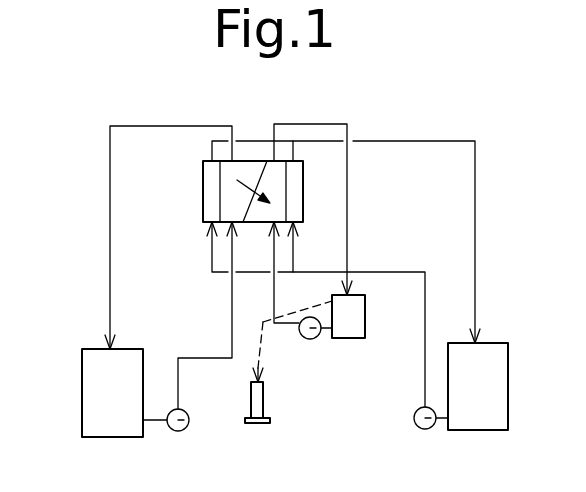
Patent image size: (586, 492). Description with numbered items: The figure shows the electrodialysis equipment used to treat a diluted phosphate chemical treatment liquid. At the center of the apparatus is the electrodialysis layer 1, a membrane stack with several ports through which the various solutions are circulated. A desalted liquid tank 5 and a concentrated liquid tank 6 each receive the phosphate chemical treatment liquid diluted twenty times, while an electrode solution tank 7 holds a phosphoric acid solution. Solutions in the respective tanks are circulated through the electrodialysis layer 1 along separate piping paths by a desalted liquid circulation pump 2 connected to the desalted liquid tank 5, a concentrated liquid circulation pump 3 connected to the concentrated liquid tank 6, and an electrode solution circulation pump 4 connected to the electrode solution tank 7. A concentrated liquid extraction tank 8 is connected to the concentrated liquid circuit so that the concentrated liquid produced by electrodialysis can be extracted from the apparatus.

The electrodialysis layer 1 is at (203, 198).
The desalted liquid circulation pump 2 is at (186, 430).
The concentrated liquid circulation pump 3 is at (311, 339).
The electrode solution circulation pump 4 is at (421, 429).
The desalted liquid tank 5 is at (82, 390).
The concentrated liquid tank 6 is at (365, 325).
The electrode solution tank 7 is at (508, 406).
The concentrated liquid extraction tank 8 is at (263, 398).